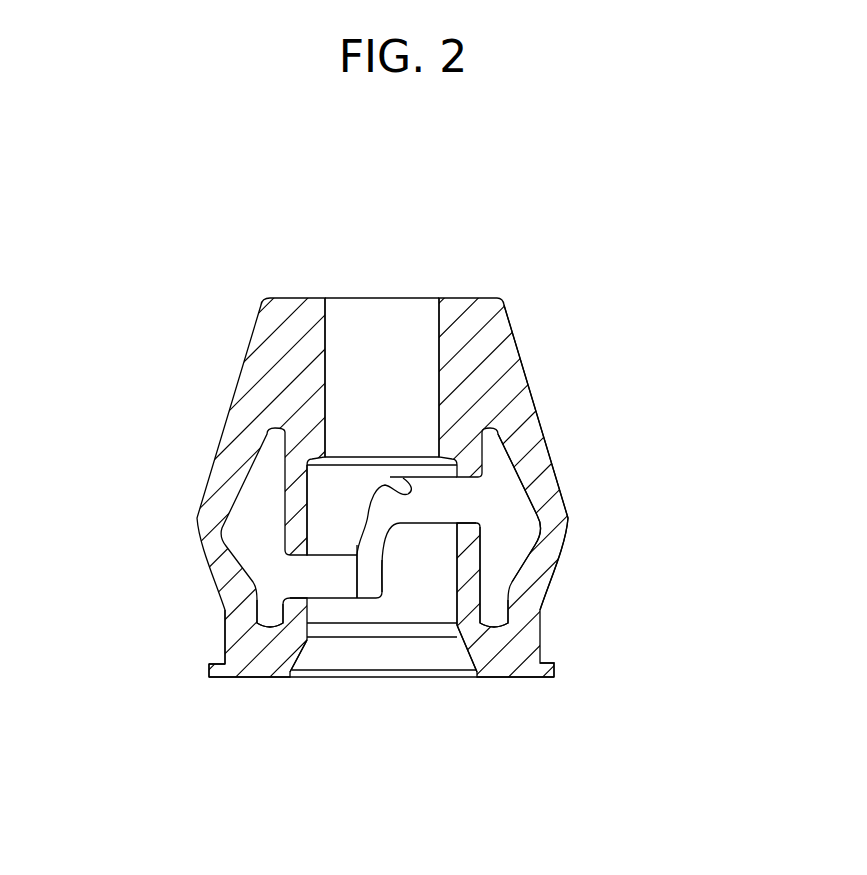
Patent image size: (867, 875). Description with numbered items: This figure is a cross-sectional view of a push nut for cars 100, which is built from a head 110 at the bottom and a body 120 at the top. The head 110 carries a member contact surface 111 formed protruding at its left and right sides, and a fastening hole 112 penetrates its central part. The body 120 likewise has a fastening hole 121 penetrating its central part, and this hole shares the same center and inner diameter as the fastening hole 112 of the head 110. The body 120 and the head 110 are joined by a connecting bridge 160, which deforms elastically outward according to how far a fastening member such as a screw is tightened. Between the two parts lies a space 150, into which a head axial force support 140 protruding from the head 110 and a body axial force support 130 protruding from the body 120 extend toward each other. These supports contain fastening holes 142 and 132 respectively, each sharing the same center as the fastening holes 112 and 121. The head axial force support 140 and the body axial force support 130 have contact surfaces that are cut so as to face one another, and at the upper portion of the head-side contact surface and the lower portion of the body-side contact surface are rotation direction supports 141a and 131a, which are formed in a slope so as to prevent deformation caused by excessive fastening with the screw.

The cap assembly 100 is at (238, 279).
The head 110 is at (247, 678).
The member contact surface 111 is at (552, 671).
The fastening hole 112 is at (428, 661).
The body 120 is at (490, 298).
The fastening hole 121 is at (370, 324).
The body axial force support 130 is at (468, 520).
The rotation direction support 131a is at (357, 598).
The fastening hole 132 is at (509, 596).
The head axial force support 140 is at (290, 562).
The rotation direction support 141a is at (403, 478).
The fastening hole 142 is at (308, 508).
The space 150 is at (512, 518).
The connecting bridge 160 is at (570, 527).